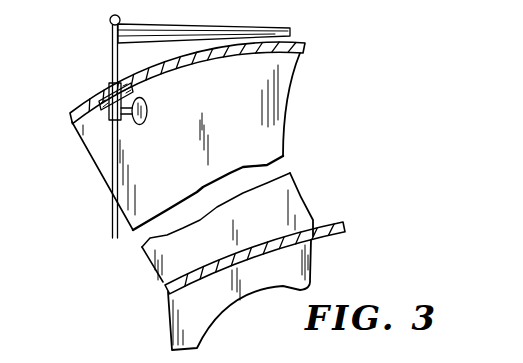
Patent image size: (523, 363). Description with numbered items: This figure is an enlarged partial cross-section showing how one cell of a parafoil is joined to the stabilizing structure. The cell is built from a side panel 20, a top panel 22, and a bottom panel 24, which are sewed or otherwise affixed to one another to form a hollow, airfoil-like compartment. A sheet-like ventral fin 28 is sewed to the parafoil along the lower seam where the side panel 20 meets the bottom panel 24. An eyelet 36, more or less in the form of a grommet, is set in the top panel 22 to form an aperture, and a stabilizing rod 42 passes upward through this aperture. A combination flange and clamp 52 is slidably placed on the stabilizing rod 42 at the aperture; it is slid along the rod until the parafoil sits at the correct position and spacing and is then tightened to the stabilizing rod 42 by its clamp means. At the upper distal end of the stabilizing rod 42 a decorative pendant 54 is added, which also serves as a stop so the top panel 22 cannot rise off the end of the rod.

The side panel 20 is at (293, 88).
The top panel 22 is at (205, 60).
The bottom panel 24 is at (257, 240).
The ventral fin 28 is at (172, 312).
The eyelet 36 is at (107, 85).
The stabilizing rod 42 is at (110, 210).
The flange and clamp 52 is at (150, 98).
The decorative pendant 54 is at (290, 32).